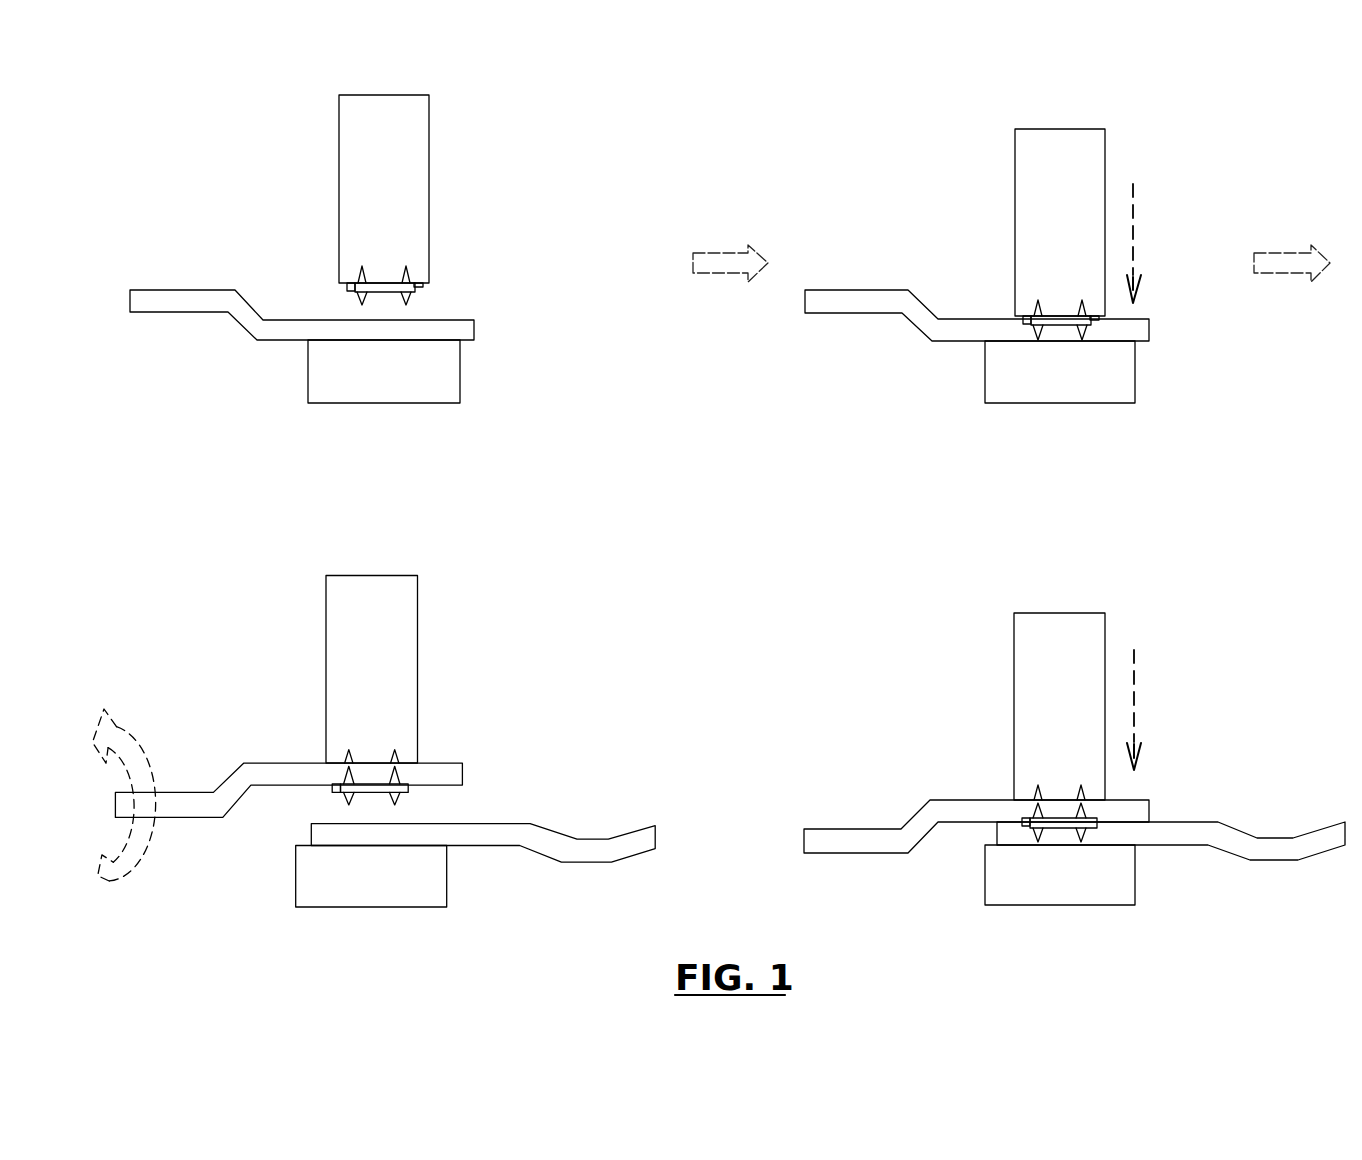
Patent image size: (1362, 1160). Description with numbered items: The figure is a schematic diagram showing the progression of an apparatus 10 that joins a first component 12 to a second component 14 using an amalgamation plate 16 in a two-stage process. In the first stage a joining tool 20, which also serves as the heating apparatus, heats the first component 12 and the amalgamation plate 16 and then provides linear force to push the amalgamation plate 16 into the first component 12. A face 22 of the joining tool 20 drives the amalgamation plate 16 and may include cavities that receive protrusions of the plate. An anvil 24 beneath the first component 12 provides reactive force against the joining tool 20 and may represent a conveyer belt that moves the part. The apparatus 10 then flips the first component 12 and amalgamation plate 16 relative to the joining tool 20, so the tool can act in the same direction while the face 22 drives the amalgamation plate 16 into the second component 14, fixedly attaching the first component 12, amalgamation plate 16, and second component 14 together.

The apparatus 10 is at (495, 140).
The first component 12 is at (190, 295).
The second component 14 is at (577, 841).
The amalgamation plate 16 is at (428, 284).
The joining tool 20 is at (369, 140).
The face 22 is at (355, 291).
The anvil 24 is at (437, 365).